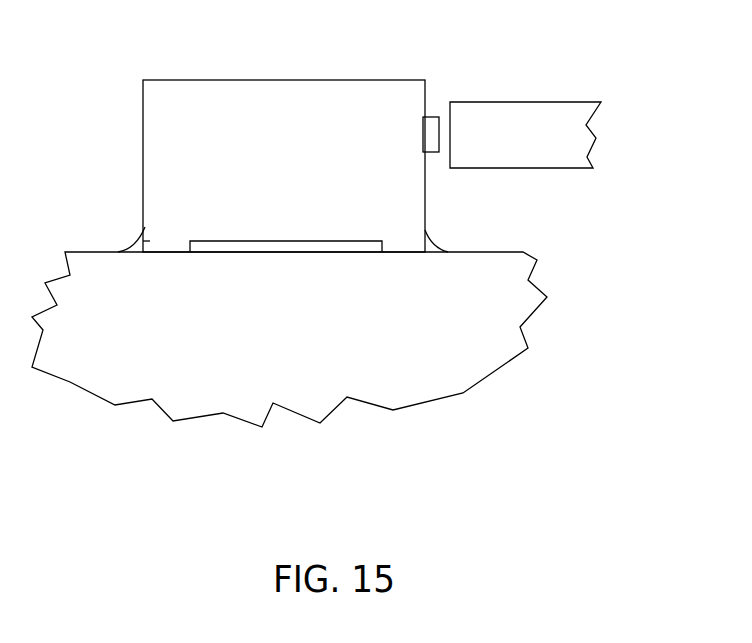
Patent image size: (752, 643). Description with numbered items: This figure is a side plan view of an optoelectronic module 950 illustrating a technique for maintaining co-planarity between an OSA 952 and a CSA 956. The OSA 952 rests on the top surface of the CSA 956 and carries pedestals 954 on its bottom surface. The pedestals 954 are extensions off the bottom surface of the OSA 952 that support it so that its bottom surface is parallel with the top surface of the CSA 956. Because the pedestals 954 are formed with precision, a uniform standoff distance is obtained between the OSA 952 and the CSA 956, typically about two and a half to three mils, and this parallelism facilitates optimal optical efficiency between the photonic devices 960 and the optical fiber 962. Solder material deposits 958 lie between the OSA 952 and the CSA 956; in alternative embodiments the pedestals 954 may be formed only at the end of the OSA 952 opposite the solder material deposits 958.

The optoelectronic module 950 is at (364, 240).
The OSA 952 is at (282, 80).
The pedestals 954 is at (130, 245).
The CSA 956 is at (498, 372).
The solder material deposits 958 is at (374, 247).
The photonic devices 960 is at (433, 117).
The optical fiber 962 is at (525, 110).